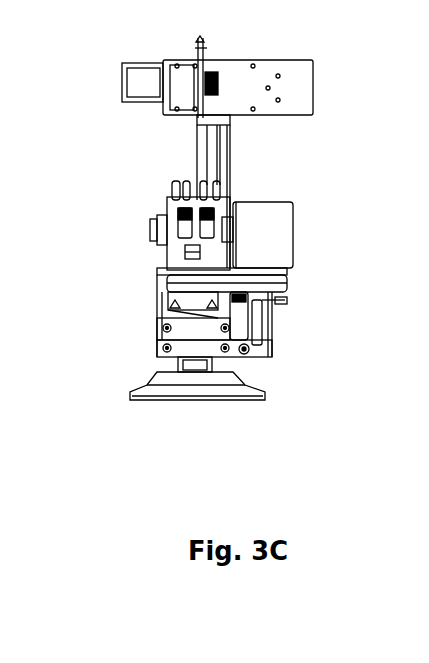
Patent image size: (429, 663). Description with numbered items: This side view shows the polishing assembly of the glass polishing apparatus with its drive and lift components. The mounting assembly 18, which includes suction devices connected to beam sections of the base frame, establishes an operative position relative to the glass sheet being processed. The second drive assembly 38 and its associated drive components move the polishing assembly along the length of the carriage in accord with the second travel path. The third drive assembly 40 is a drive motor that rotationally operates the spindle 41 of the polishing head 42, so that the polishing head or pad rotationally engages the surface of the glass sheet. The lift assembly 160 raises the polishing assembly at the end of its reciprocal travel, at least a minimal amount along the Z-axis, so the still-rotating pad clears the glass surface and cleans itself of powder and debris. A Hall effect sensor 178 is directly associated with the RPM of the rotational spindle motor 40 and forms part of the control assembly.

The mounting assembly 18 is at (140, 393).
The second drive assembly 38 is at (178, 180).
The third drive assembly 40 is at (293, 257).
The spindle 41 is at (233, 362).
The polishing head 42 is at (188, 400).
The lift assembly 160 is at (230, 147).
The Hall effect sensor 178 is at (293, 218).